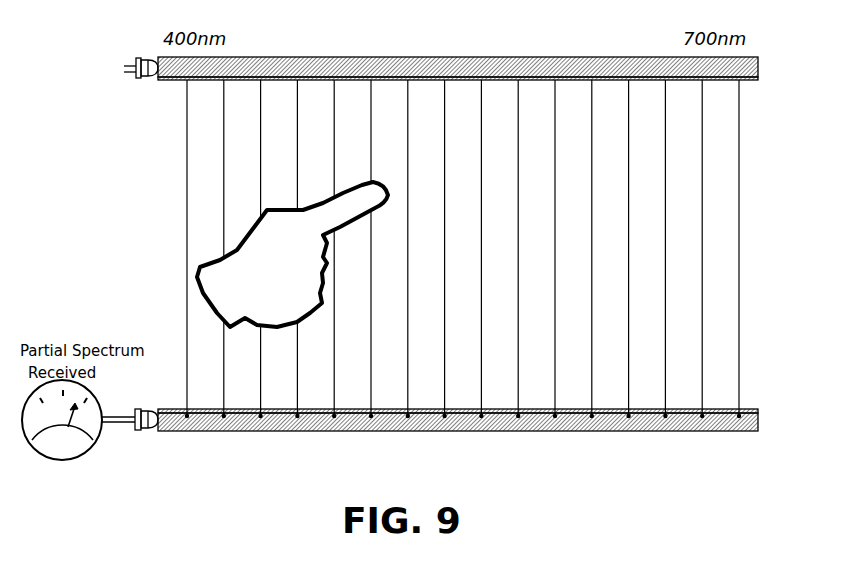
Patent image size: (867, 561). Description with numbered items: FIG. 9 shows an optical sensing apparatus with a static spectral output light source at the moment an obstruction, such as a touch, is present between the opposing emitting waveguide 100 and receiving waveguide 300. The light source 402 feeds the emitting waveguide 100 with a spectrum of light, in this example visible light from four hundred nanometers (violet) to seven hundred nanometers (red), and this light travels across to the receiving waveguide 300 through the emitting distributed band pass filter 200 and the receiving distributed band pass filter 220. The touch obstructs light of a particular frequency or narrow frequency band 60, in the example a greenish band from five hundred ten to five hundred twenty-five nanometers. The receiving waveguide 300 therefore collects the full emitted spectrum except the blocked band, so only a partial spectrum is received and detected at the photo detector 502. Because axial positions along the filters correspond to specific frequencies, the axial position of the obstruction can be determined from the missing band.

The emitting waveguide 100 is at (752, 62).
The emitting distributed band pass filter 200 is at (758, 80).
The receiving distributed band pass filter 220 is at (757, 408).
The receiving waveguide 300 is at (752, 431).
The light source 402 is at (142, 80).
The photo detector 502 is at (141, 432).
The narrow frequency band 60 is at (357, 255).